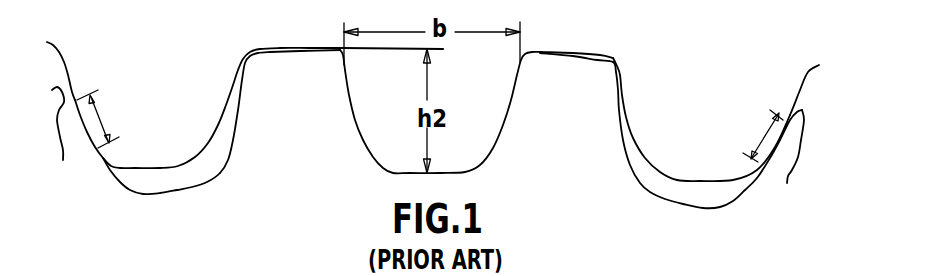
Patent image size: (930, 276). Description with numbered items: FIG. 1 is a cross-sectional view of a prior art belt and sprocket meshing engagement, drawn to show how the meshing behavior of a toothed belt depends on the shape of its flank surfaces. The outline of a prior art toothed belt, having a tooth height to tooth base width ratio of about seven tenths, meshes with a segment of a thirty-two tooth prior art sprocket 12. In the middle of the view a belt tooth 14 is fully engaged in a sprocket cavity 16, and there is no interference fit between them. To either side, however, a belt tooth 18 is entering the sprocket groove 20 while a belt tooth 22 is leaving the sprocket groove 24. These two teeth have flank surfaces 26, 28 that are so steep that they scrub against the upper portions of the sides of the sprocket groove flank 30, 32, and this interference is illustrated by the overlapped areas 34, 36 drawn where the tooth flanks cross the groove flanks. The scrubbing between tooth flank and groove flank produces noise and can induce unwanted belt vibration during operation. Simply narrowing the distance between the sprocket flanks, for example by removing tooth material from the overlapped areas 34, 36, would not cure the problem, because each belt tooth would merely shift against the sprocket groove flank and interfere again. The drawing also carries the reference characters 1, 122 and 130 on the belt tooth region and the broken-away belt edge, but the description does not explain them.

The tooth fabric / facing layer 1 is at (655, 119).
The belt body 12 is at (565, 186).
The tooth groove 14 is at (490, 87).
The groove flank 16 is at (332, 165).
The first tooth 18 is at (170, 73).
The tooth bottom of first tooth 20 is at (165, 195).
The second tooth 22 is at (694, 93).
The tooth flank of second tooth 24 is at (640, 147).
The belt edge segment 26 is at (79, 66).
The belt edge segment 28 is at (821, 90).
The broken-away belt portion 30 is at (80, 146).
The tooth bottom of second tooth 32 is at (752, 181).
The layer thickness dimension 34 is at (122, 119).
The layer thickness dimension 36 is at (745, 130).
The broken-away belt portion 122 is at (822, 154).
The tooth flank of first tooth 130 is at (280, 131).